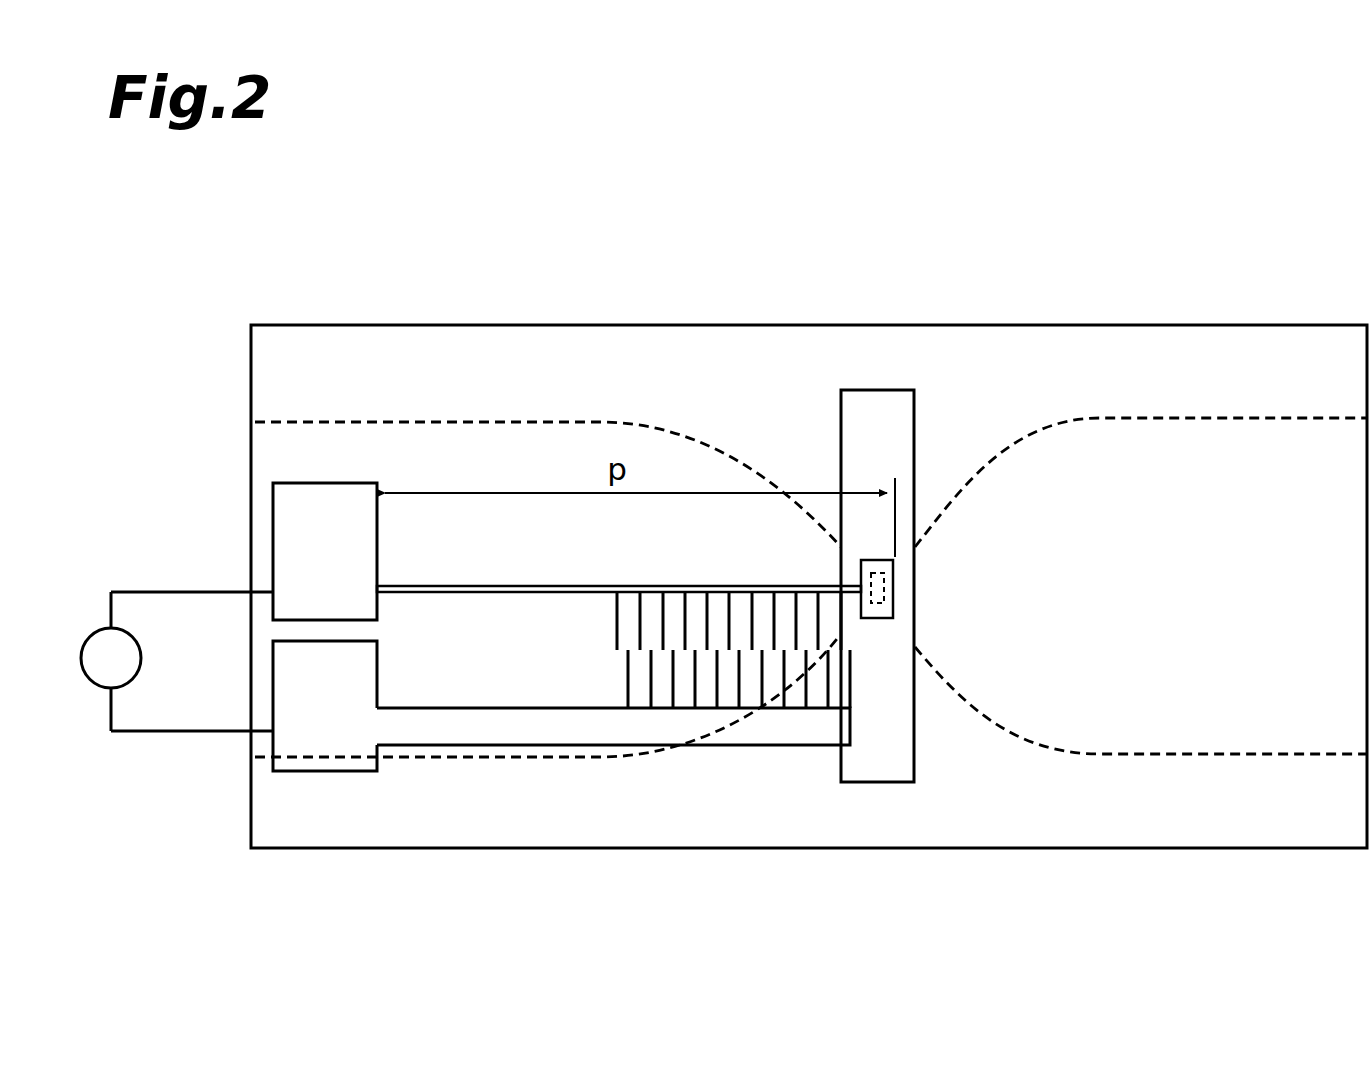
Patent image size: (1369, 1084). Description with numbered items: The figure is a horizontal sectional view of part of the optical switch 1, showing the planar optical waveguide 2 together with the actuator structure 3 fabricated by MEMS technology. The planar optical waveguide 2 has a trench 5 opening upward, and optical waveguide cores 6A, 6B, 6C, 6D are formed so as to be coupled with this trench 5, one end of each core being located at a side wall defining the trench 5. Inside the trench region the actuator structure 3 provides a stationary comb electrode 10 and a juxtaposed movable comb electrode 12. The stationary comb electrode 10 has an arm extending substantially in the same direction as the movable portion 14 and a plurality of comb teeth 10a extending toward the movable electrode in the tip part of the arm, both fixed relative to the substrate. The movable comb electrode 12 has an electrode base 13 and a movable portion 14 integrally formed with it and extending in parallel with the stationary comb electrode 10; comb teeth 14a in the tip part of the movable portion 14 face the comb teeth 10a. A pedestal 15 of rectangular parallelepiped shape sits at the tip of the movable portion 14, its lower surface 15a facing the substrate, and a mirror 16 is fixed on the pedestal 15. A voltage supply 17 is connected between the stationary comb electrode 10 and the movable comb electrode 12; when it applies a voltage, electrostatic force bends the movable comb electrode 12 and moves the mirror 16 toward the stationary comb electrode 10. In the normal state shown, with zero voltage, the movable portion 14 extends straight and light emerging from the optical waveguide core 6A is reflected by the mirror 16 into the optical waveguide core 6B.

The optical switch 1 is at (445, 280).
The planar optical waveguide 2 is at (916, 835).
The actuator structure 3 is at (315, 774).
The trench 5 is at (879, 405).
The optical waveguide core 6A is at (482, 420).
The optical waveguide core 6B is at (514, 762).
The optical waveguide core 6C is at (1203, 756).
The optical waveguide core 6D is at (1195, 418).
The stationary comb electrode 10 is at (750, 733).
The comb teeth 10a is at (627, 675).
The movable comb electrode 12 is at (598, 582).
The electrode base 13 is at (291, 542).
The movable portion 14 is at (505, 587).
The comb teeth 14a is at (615, 624).
The pedestal 15 is at (895, 570).
The lower surface 15a is at (880, 620).
The mirror 16 is at (897, 595).
The voltage supply 17 is at (81, 660).